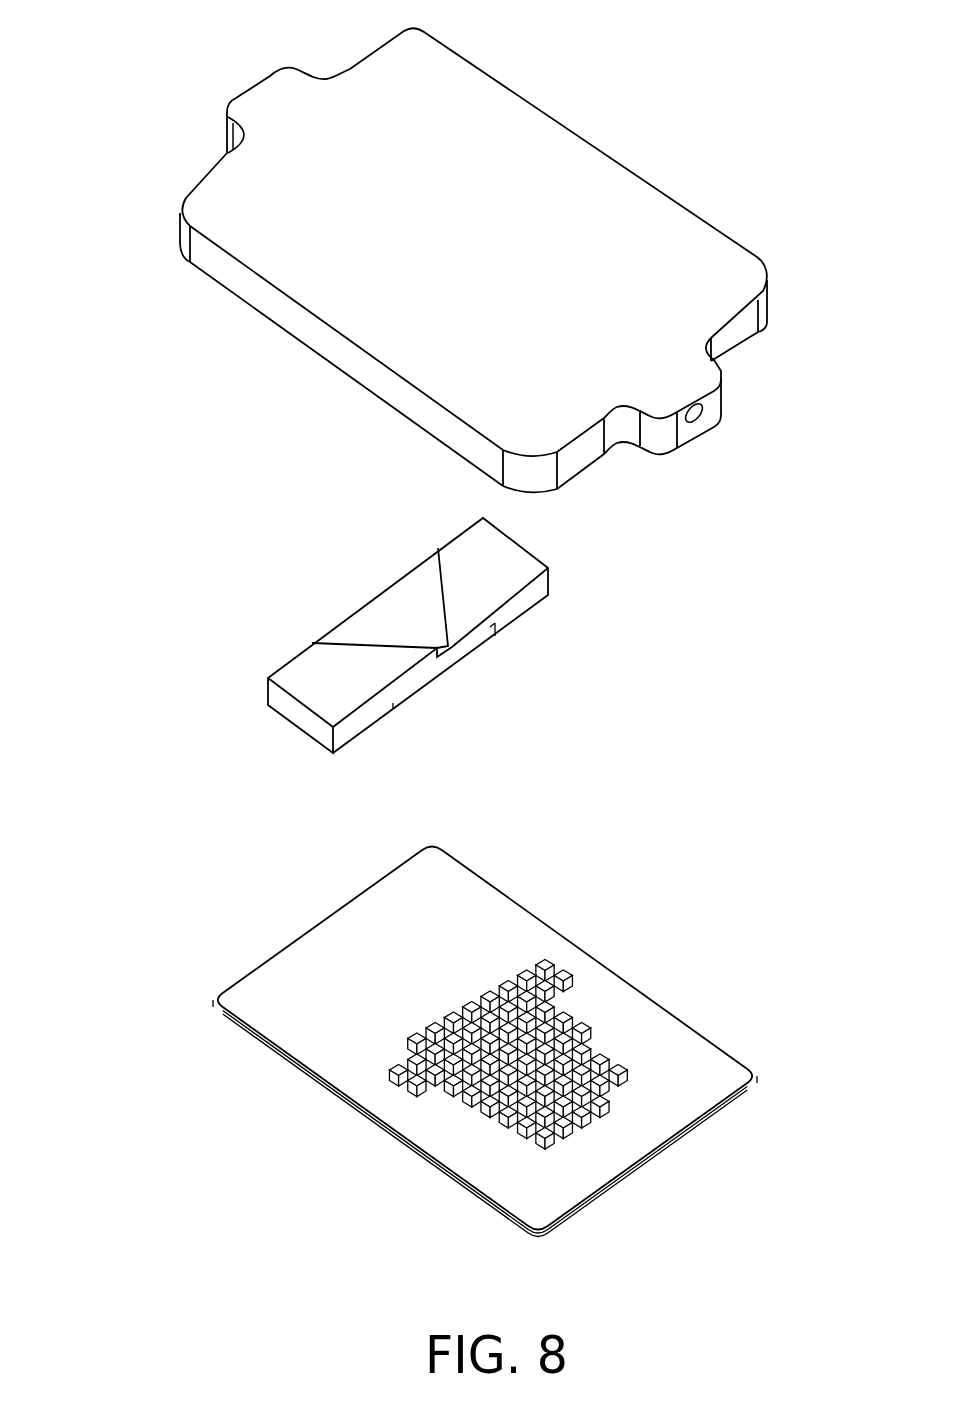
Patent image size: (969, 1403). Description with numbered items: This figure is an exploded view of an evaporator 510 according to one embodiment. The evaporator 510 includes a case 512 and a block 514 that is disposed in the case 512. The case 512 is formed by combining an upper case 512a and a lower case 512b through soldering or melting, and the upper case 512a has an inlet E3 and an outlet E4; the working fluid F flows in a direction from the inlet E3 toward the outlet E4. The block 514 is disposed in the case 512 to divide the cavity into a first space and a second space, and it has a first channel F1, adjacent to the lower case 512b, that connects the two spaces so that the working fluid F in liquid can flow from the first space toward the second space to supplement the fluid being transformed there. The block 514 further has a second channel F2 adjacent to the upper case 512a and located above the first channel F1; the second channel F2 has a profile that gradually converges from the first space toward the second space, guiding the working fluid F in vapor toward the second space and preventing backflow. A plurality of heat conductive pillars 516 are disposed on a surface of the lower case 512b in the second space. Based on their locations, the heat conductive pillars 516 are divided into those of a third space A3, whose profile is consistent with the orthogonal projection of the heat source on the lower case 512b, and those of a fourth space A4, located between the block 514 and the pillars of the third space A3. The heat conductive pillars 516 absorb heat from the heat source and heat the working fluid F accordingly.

The evaporator 510 is at (451, 639).
The case 512 is at (451, 632).
The upper case 512a is at (647, 202).
The lower case 512b is at (713, 1073).
The block 514 is at (517, 567).
The heat conductive pillars 516 is at (485, 1092).
The inlet E3 is at (262, 78).
The outlet E4 is at (692, 418).
The working fluid F is at (232, 57).
The first channel F1 is at (437, 668).
The second channel F2 is at (400, 623).
The third space A3 is at (637, 1060).
The fourth space A4 is at (565, 977).